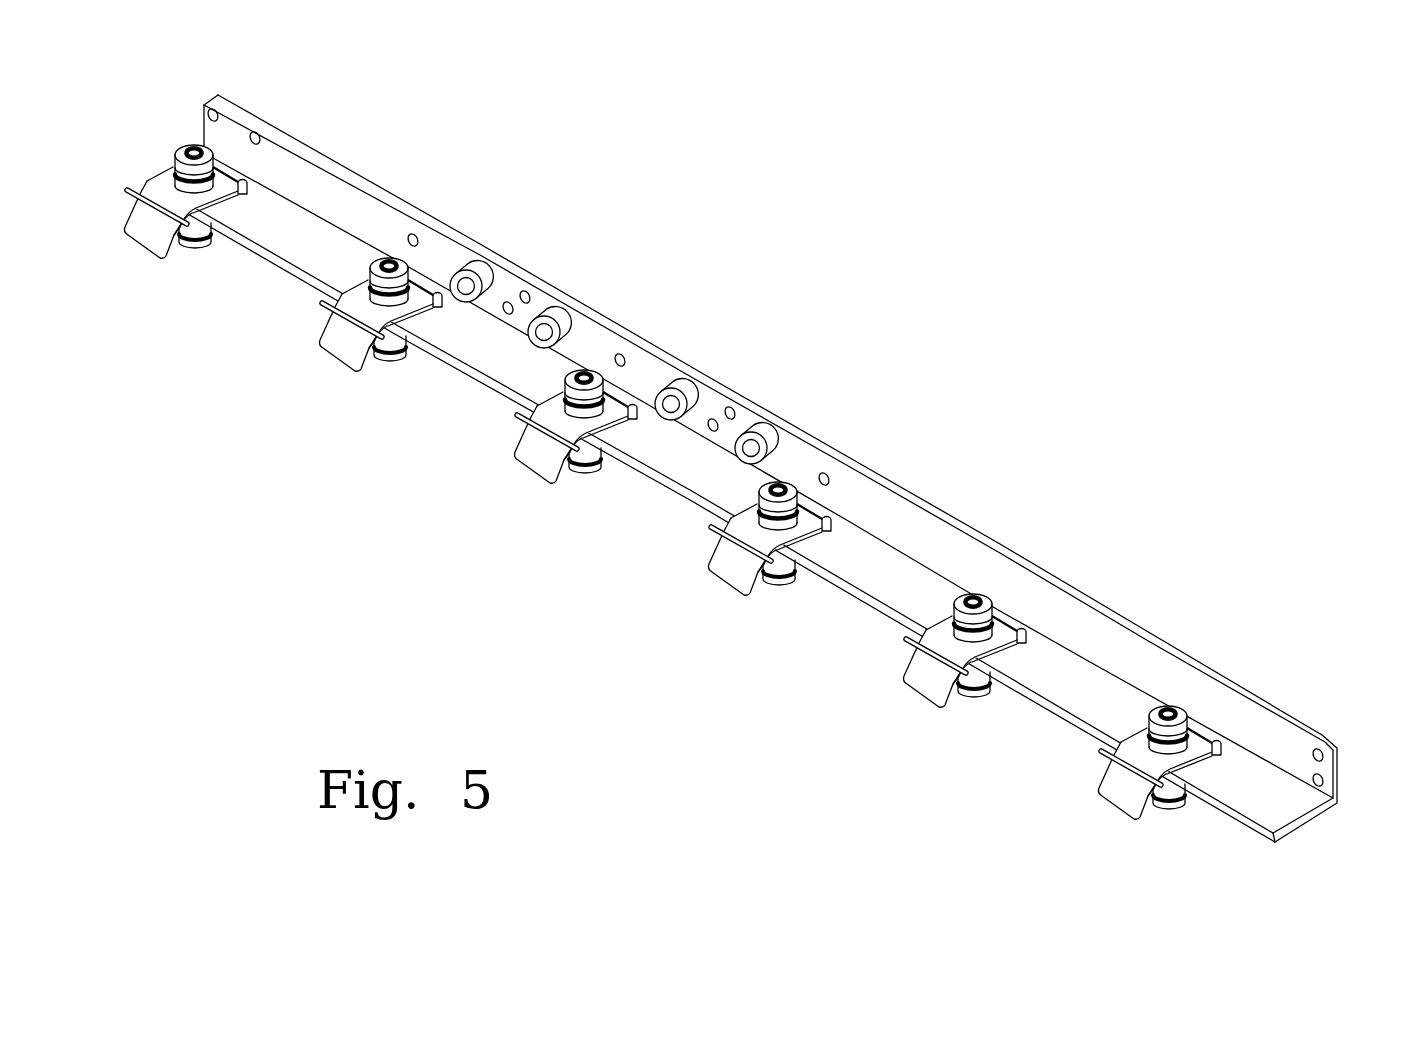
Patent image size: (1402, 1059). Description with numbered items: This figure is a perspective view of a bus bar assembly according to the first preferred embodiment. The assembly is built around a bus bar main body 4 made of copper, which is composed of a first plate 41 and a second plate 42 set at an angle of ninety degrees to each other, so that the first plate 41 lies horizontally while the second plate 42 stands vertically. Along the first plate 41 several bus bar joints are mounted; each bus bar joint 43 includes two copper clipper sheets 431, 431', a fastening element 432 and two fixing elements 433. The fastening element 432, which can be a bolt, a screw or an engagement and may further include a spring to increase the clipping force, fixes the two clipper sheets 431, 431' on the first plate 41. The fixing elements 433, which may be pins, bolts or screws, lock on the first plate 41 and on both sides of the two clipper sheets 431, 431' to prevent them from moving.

The bus bar main body 4 is at (751, 515).
The first plate 41 is at (1070, 693).
The second plate 42 is at (1233, 682).
The bus bar joint 43 is at (720, 593).
The clipper sheet 431 is at (927, 703).
The clipper sheet 431' is at (865, 669).
The fastening element 432 is at (1038, 537).
The fixing element 433 is at (1134, 580).